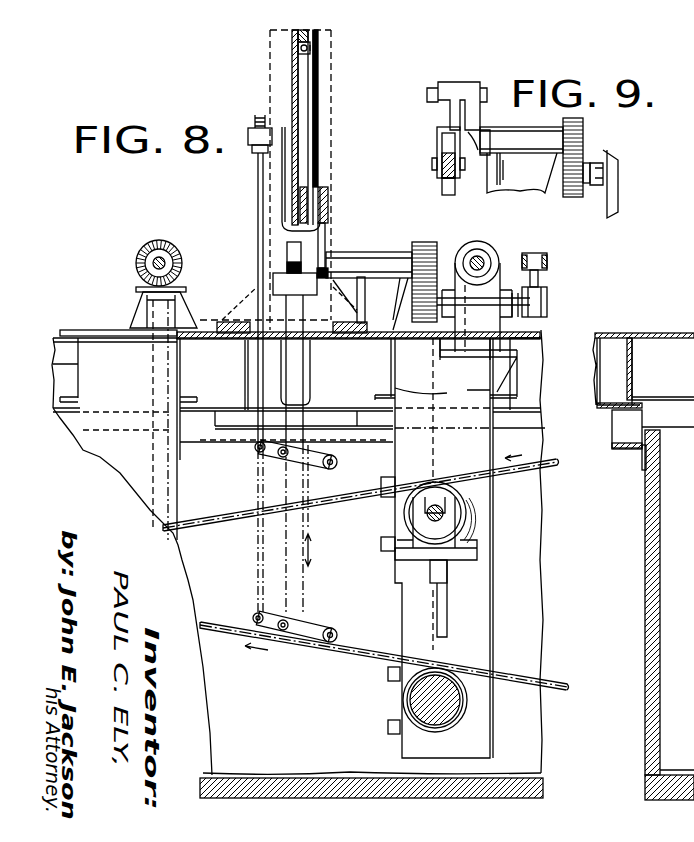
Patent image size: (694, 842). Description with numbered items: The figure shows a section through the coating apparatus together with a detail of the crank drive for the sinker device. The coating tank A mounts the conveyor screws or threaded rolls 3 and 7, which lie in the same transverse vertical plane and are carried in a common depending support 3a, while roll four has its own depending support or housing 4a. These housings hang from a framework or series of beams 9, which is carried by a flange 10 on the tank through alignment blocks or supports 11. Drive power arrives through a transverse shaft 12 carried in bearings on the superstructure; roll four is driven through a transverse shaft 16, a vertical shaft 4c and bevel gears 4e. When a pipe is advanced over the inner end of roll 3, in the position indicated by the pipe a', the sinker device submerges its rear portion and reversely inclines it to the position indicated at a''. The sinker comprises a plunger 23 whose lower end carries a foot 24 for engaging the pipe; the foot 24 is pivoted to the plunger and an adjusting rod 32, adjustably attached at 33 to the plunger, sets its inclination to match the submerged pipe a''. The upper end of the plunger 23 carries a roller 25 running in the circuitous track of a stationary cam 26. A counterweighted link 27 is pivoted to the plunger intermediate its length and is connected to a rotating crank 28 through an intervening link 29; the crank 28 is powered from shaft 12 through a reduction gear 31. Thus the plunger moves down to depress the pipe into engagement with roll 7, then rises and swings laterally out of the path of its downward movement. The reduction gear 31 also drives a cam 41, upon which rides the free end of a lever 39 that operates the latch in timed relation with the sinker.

In FIG. 8, the conveyor screw or threaded roll 3 is at (458, 508).
In FIG. 8, the common depending support 3a is at (477, 573).
In FIG. 8, the depending support or housing 4a is at (143, 465).
In FIG. 8, the vertical shaft 4c is at (153, 367).
In FIG. 8, the bevel gears 4e is at (140, 293).
In FIG. 8, the conveyor screw or threaded roll 7 is at (452, 702).
In FIG. 8, the framework or series of beams 9 is at (675, 345).
In FIG. 8, the flange 10 is at (623, 448).
In FIG. 8, the alignment blocks or supports 11 is at (200, 422).
In FIG. 8, the transverse shaft 12 is at (473, 258).
In FIG. 8, the transverse shaft 16 is at (138, 253).
In FIG. 8, the plunger 23 is at (293, 392).
In FIG. 8, the foot 24 is at (335, 470).
In FIG. 8, the roller 25 is at (296, 50).
In FIG. 8, the stationary cam 26 is at (305, 73).
In FIG. 8, the counterweighted link 27 is at (287, 258).
In FIG. 9, the counterweighted link 27 is at (442, 188).
In FIG. 8, the rotating crank 28 is at (325, 240).
In FIG. 9, the rotating crank 28 is at (472, 100).
In FIG. 9, the intervening link 29 is at (440, 128).
In FIG. 8, the reduction gear 31 is at (495, 250).
In FIG. 9, the reduction gear 31 is at (607, 165).
In FIG. 8, the adjusting rod 32 is at (258, 190).
In FIG. 8, the adjustable attachment 33 is at (258, 125).
In FIG. 8, the lever 39 is at (545, 256).
In FIG. 8, the cam 41 is at (548, 300).
In FIG. 8, the coating tank A is at (318, 722).
In FIG. 8, the pipe a' is at (370, 493).
In FIG. 8, the pipe a'' is at (384, 656).